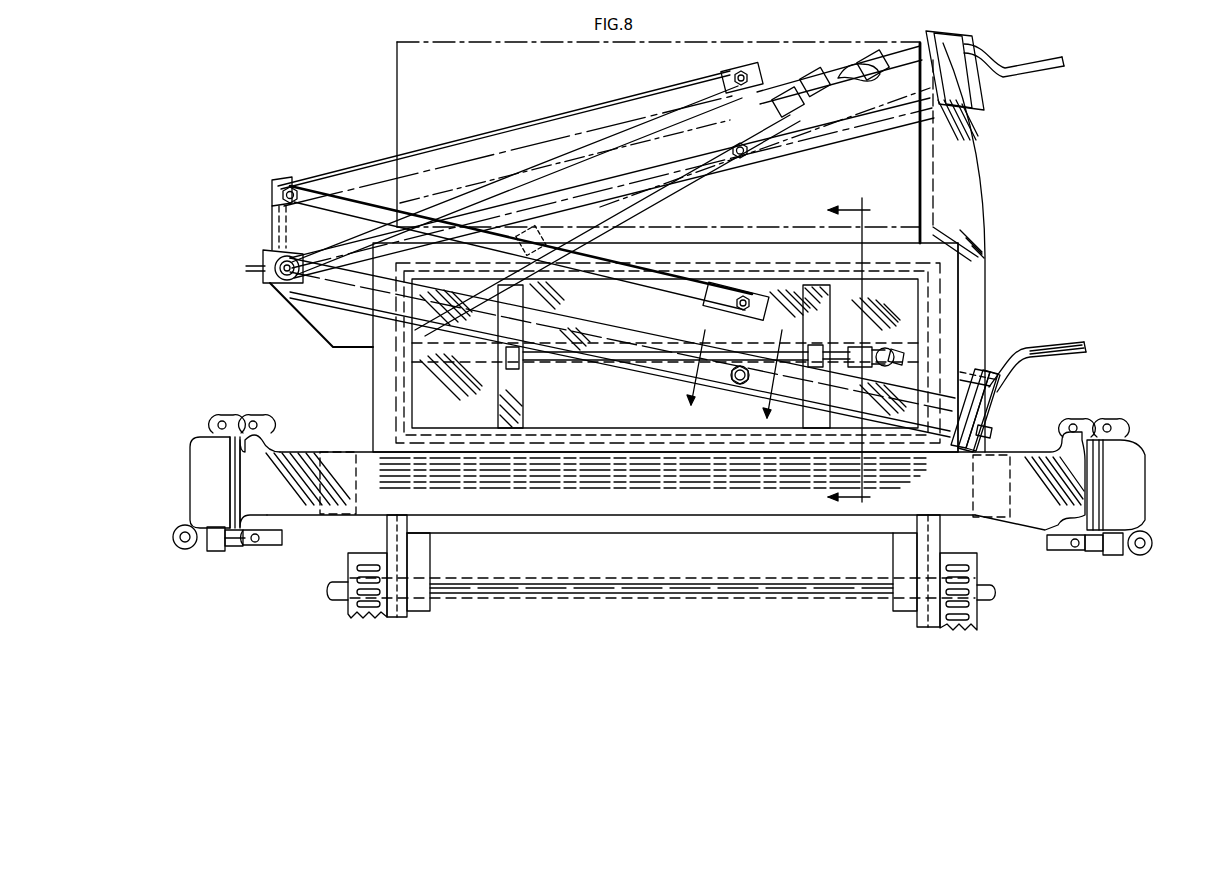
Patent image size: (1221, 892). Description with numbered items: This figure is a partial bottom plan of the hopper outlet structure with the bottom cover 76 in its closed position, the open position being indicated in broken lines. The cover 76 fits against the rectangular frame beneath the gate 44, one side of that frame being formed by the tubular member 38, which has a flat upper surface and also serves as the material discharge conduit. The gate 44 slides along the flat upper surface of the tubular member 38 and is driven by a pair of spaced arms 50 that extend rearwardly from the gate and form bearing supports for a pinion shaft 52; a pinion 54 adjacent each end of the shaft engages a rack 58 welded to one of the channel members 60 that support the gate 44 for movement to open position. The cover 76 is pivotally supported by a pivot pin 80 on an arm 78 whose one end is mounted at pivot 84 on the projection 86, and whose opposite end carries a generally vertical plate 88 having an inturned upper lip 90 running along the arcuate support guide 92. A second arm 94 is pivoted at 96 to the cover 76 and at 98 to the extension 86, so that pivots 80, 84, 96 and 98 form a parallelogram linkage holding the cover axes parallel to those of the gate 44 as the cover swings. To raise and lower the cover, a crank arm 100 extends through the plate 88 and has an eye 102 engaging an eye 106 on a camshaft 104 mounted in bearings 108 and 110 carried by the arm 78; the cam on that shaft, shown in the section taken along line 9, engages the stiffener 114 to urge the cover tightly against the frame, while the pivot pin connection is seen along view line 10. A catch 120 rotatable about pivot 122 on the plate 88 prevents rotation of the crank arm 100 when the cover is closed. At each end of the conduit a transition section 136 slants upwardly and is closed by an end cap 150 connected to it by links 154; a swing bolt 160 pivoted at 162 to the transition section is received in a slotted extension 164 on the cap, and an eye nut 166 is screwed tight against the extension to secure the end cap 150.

The section line 9- 9 is at (855, 354).
The view line 10- 10 is at (739, 365).
The tubular member 38 is at (778, 516).
The gate 44 is at (655, 530).
The arms 50 is at (430, 556).
The pinion shaft 52 is at (583, 584).
The pinion 54 is at (372, 606).
The rack 58 is at (348, 608).
The channel members 60 is at (387, 535).
The bottom cover 76 is at (665, 347).
The arm 78 is at (805, 132).
The pivot pin 80 is at (748, 158).
The pivot 84 is at (268, 283).
The projection 86 is at (318, 336).
The vertical plate 88 is at (992, 410).
The inturned upper lip 90 is at (985, 360).
The arcuate support guide 92 is at (983, 230).
The second arm 94 is at (512, 122).
The pivot 96 is at (760, 76).
The pivot 98 is at (270, 197).
The crank arm 100 is at (1040, 44).
The eye 102 is at (901, 342).
The camshaft 104 is at (838, 350).
The eye 106 is at (870, 345).
The bearing 108 is at (818, 343).
The bearing 110 is at (495, 372).
The stiffener 114 is at (842, 300).
The catch 120 is at (990, 396).
The pivot 122 is at (992, 432).
The transition section 136 is at (278, 445).
The end cap 150 is at (190, 468).
The links 154 is at (249, 391).
The swing bolt 160 is at (234, 546).
The pivot 162 is at (258, 545).
The slotted extension 164 is at (214, 551).
The eye nut 166 is at (174, 545).